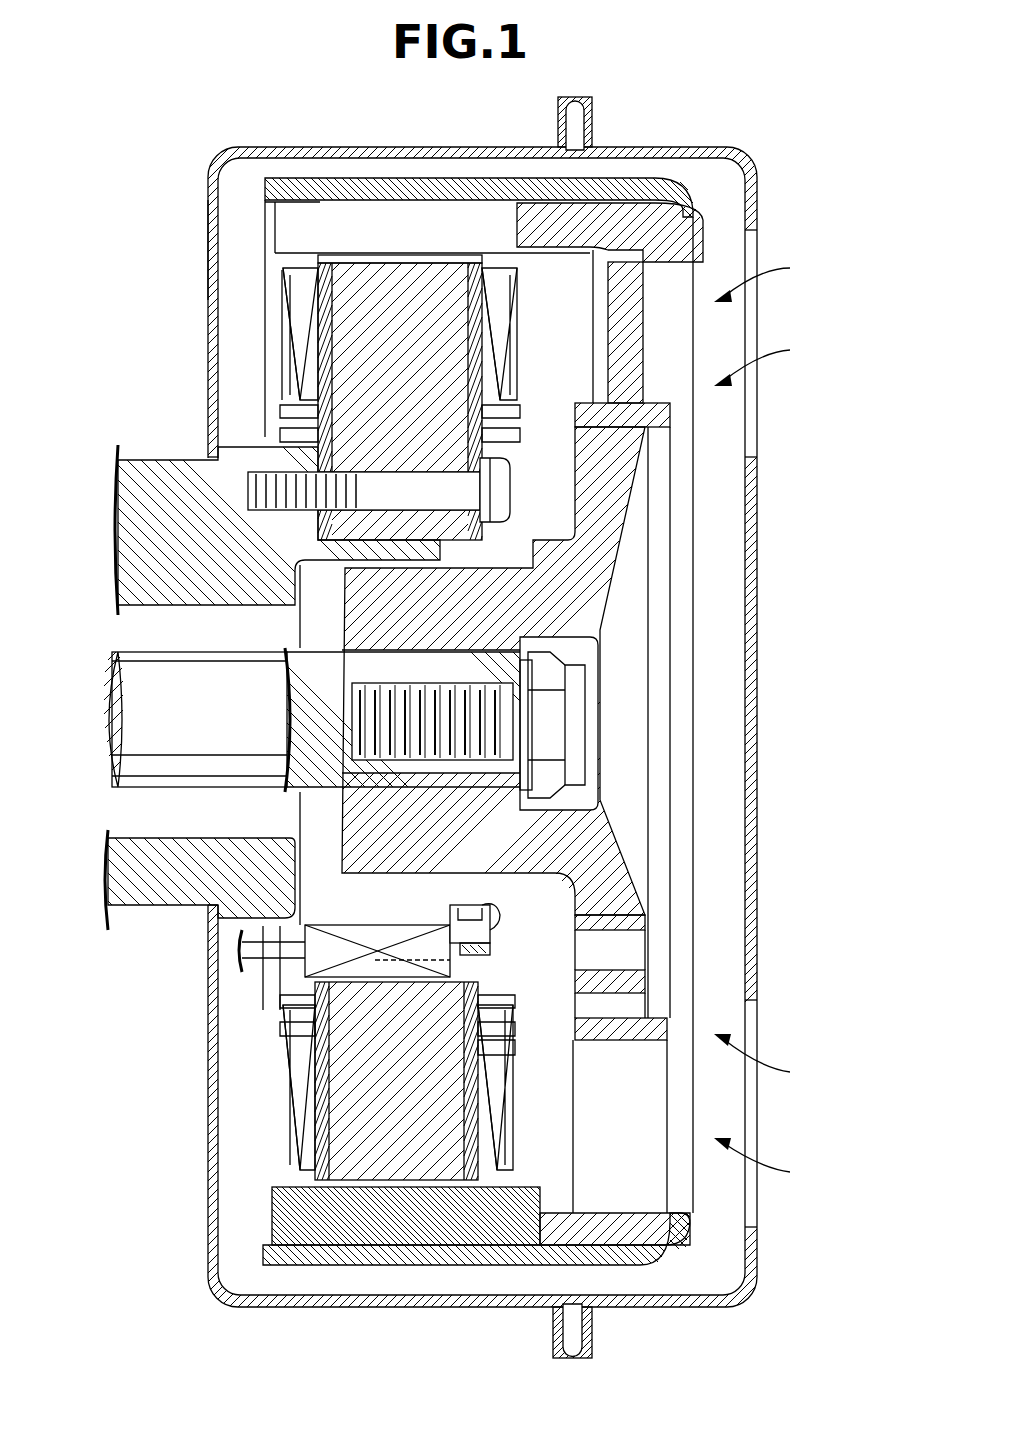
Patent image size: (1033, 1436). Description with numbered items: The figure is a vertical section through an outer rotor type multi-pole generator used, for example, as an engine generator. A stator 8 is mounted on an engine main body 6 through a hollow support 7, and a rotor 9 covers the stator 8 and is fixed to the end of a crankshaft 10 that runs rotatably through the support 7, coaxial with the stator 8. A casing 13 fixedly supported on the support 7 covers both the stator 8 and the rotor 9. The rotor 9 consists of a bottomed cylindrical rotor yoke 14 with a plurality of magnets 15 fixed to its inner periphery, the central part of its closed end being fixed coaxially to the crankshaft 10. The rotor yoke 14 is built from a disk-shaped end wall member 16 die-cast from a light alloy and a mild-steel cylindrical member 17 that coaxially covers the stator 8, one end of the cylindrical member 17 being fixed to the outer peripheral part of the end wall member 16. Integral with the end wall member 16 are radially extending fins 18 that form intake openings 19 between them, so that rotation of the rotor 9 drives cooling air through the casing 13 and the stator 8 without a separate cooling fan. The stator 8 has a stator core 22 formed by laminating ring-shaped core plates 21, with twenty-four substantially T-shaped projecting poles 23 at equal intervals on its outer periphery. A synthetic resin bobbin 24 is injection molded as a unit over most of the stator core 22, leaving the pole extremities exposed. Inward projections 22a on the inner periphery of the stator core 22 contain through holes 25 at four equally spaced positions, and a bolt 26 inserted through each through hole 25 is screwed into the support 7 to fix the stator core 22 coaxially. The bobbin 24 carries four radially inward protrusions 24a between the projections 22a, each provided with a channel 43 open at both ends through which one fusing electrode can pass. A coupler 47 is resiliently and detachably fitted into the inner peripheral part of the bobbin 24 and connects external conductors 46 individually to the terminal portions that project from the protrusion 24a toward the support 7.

The engine main body 6 is at (157, 450).
The hollow support 7 is at (150, 905).
The stator 8 is at (275, 362).
The rotor 9 is at (380, 172).
The crankshaft 10 is at (150, 755).
The casing 13 is at (214, 238).
The rotor yoke 14 is at (607, 68).
The magnets 15 is at (291, 247).
The end wall member 16 is at (633, 200).
The cylindrical member 17 is at (592, 185).
The fins 18 is at (618, 317).
The intake openings 19 is at (640, 1067).
The core plates 21 is at (352, 262).
The stator core 22 is at (378, 389).
The projections 22a is at (433, 545).
The projecting poles 23 is at (430, 272).
The bobbin 24 is at (292, 1022).
The protrusions 24a is at (497, 978).
The through holes 25 is at (383, 480).
The bolt 26 is at (507, 495).
The channel 43 is at (467, 905).
The external conductors 46 is at (240, 956).
The coupler 47 is at (365, 935).